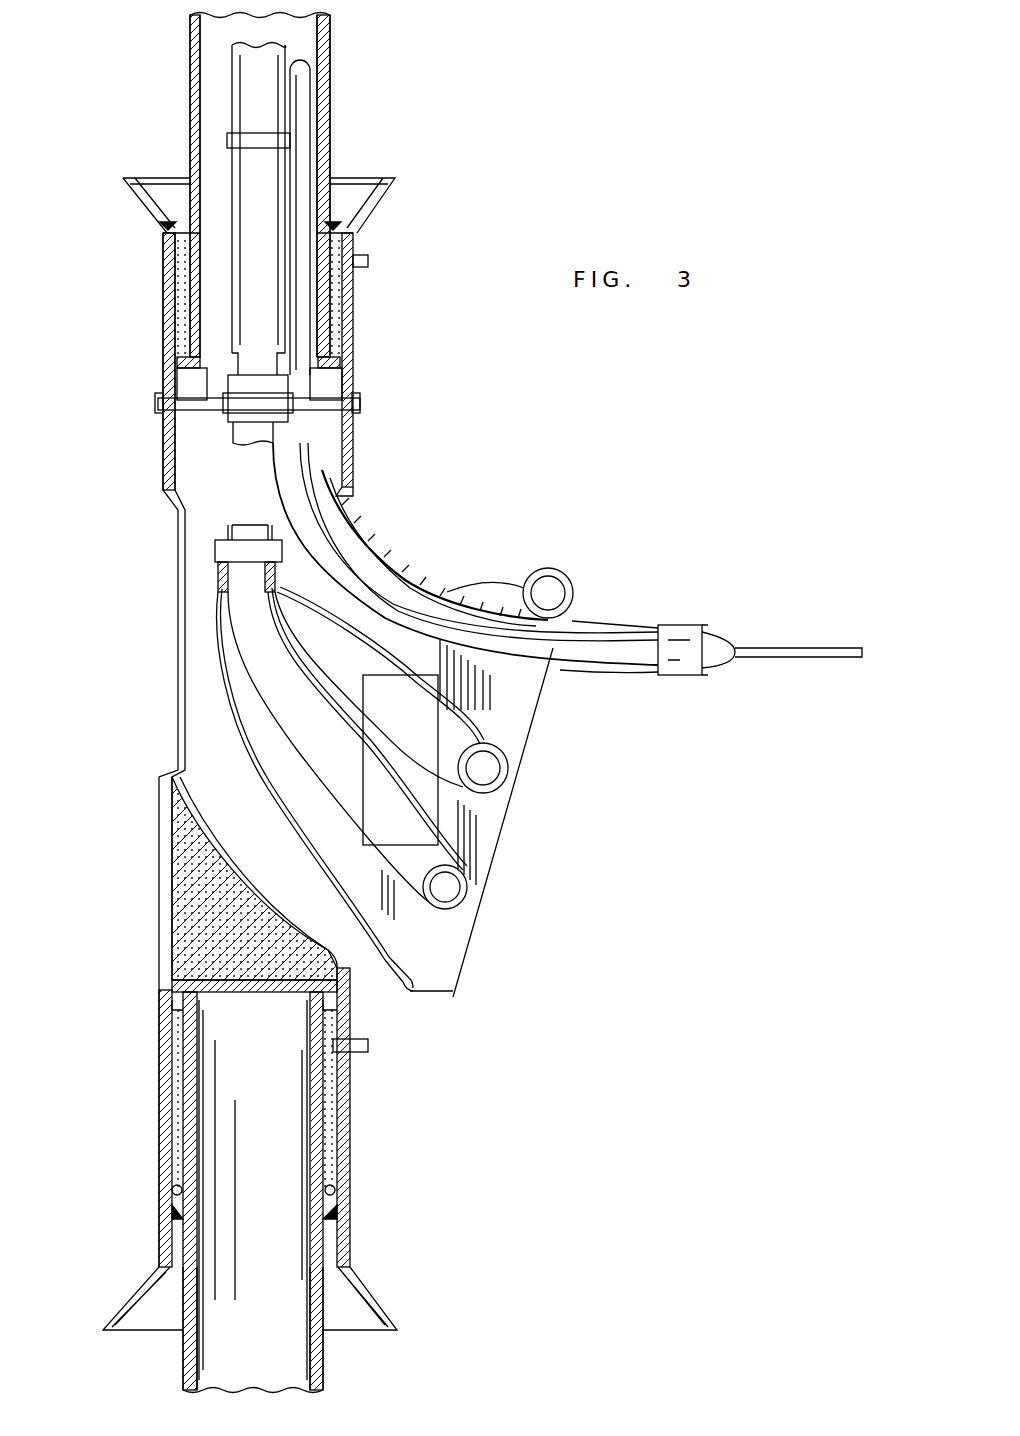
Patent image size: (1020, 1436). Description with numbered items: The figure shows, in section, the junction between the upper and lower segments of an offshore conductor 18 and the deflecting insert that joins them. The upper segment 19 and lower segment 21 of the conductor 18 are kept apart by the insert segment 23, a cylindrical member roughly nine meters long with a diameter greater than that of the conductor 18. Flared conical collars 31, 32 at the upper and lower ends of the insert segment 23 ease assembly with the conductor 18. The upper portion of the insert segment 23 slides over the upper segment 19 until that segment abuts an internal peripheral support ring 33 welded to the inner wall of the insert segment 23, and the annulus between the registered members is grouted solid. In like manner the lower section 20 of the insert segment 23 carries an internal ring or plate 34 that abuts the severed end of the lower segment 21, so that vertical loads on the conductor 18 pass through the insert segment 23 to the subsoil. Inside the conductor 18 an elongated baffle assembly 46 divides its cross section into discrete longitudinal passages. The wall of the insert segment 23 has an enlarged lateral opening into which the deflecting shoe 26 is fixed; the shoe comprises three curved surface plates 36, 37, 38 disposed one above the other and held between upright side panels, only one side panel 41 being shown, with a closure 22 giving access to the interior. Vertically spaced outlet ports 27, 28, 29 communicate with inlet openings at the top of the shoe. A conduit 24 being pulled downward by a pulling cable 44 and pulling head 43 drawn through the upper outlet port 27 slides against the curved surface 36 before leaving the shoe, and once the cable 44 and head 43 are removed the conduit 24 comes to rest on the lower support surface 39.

The conductor 18 is at (345, 62).
The upper segment of conductor 19 is at (190, 86).
The baffle assembly 46 is at (304, 118).
The flared conical collar 31 is at (358, 193).
The internal peripheral support ring 33 is at (335, 360).
The insert segment 23 is at (158, 468).
The conduit 24 is at (343, 553).
The deflecting shoe 26 is at (412, 562).
The curved surface plate 36 is at (440, 600).
The pulling head 43 is at (676, 632).
The pulling cable 44 is at (795, 650).
The upper outlet port 27 is at (525, 685).
The lower support surface 39 is at (493, 725).
The curved surface plate 37 is at (500, 782).
The closure 22 is at (430, 803).
The outlet port 28 is at (480, 860).
The curved surface plate 38 is at (445, 925).
The side panel 41 is at (437, 980).
The outlet port 29 is at (420, 988).
The lower section of insert segment 20 is at (340, 1143).
The internal ring or plate 34 is at (345, 1052).
The lower segment of conductor 21 is at (318, 1295).
The flared conical collar 32 is at (397, 1318).